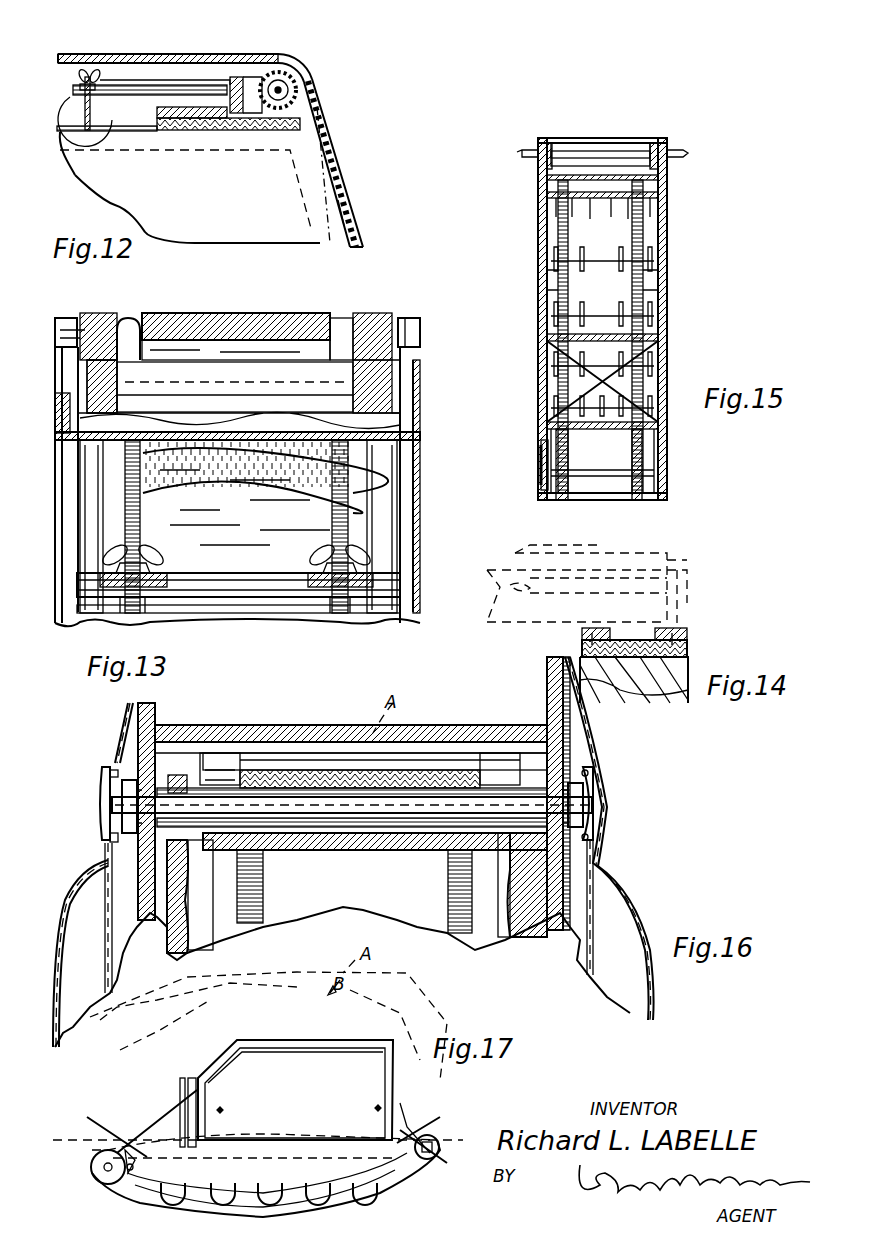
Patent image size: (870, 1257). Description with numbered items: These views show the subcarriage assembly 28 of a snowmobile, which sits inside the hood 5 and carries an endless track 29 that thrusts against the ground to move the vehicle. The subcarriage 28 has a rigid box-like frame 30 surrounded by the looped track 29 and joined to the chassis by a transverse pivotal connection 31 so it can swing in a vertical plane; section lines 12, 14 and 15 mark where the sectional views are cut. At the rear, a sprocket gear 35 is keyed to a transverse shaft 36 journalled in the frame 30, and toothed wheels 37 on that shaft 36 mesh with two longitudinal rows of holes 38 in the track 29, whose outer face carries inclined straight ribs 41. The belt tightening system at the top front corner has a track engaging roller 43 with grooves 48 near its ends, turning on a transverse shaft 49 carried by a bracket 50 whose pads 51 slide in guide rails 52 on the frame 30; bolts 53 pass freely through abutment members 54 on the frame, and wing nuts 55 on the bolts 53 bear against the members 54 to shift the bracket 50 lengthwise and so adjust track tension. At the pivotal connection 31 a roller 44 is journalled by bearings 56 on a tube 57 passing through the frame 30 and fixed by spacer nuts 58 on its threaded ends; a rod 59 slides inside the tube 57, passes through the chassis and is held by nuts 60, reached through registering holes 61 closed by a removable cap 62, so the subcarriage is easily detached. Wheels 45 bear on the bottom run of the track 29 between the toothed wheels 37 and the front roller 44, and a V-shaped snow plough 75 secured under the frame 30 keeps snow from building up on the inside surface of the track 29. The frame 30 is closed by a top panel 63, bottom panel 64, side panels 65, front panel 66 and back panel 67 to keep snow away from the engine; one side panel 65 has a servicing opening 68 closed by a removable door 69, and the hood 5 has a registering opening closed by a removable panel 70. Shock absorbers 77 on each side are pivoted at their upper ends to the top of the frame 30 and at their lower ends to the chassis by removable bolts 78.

In FIG. 16, the hood 5 is at (607, 937).
In FIG. 13, the section line 12— 12 is at (283, 640).
In FIG. 13, the section line 14— 14 is at (111, 490).
In FIG. 17, the section line 15— 15 is at (477, 1122).
In FIG. 12, the subcarriage assembly 28 is at (340, 137).
In FIG. 13, the subcarriage assembly 28 is at (423, 617).
In FIG. 15, the subcarriage assembly 28 is at (673, 429).
In FIG. 16, the subcarriage assembly 28 is at (523, 947).
In FIG. 17, the subcarriage assembly 28 is at (407, 1037).
In FIG. 12, the endless track 29 is at (347, 207).
In FIG. 13, the endless track 29 is at (233, 357).
In FIG. 15, the endless track 29 is at (646, 298).
In FIG. 16, the endless track 29 is at (347, 777).
In FIG. 17, the endless track 29 is at (403, 1187).
In FIG. 12, the frame 30 is at (343, 173).
In FIG. 13, the frame 30 is at (413, 352).
In FIG. 15, the frame 30 is at (646, 270).
In FIG. 14, the frame 30 is at (687, 673).
In FIG. 16, the frame 30 is at (618, 873).
In FIG. 15, the pivotal connection 31 is at (692, 155).
In FIG. 16, the pivotal connection 31 is at (552, 801).
In FIG. 17, the pivotal connection 31 is at (425, 1170).
In FIG. 15, the sprocket gear 35 is at (540, 482).
In FIG. 15, the shaft 36 is at (607, 465).
In FIG. 15, the toothed wheels 37 is at (565, 479).
In FIG. 17, the toothed wheels 37 is at (92, 1193).
In FIG. 13, the holes 38 is at (120, 620).
In FIG. 15, the holes 38 is at (646, 306).
In FIG. 16, the holes 38 is at (460, 917).
In FIG. 16, the ribs 41 is at (440, 760).
In FIG. 12, the track engaging wheel 43 is at (320, 102).
In FIG. 13, the track engaging wheel 43 is at (177, 360).
In FIG. 14, the track engaging wheel 43 is at (687, 545).
In FIG. 15, the roller 44 is at (602, 152).
In FIG. 16, the roller 44 is at (400, 770).
In FIG. 15, the wheels 45 is at (586, 253).
In FIG. 17, the wheels 45 is at (280, 1207).
In FIG. 13, the grooves 48 is at (135, 362).
In FIG. 12, the shaft 49 is at (290, 82).
In FIG. 13, the shaft 49 is at (417, 367).
In FIG. 14, the shaft 49 is at (537, 627).
In FIG. 12, the bracket 50 is at (232, 55).
In FIG. 13, the bracket 50 is at (420, 433).
In FIG. 14, the bracket 50 is at (687, 578).
In FIG. 12, the pads 51 is at (250, 128).
In FIG. 13, the pads 51 is at (393, 513).
In FIG. 14, the pads 51 is at (637, 637).
In FIG. 12, the guide rails 52 is at (278, 130).
In FIG. 13, the guide rails 52 is at (393, 483).
In FIG. 14, the guide rails 52 is at (687, 652).
In FIG. 12, the bolts 53 is at (141, 87).
In FIG. 13, the bolts 53 is at (353, 527).
In FIG. 12, the abutment members 54 is at (84, 97).
In FIG. 13, the abutment members 54 is at (357, 590).
In FIG. 12, the wing nuts 55 is at (82, 123).
In FIG. 13, the wing nuts 55 is at (103, 553).
In FIG. 16, the bearings 56 is at (190, 783).
In FIG. 16, the tube 57 is at (273, 790).
In FIG. 16, the spacer nuts 58 is at (170, 783).
In FIG. 16, the rod 59 is at (307, 805).
In FIG. 16, the nuts 60 is at (586, 776).
In FIG. 16, the registering holes 61 is at (586, 840).
In FIG. 16, the removable cap 62 is at (583, 810).
In FIG. 12, the top panel 63 is at (140, 130).
In FIG. 13, the top panel 63 is at (418, 420).
In FIG. 17, the top panel 63 is at (250, 1153).
In FIG. 13, the bottom panel 64 is at (400, 472).
In FIG. 16, the bottom panel 64 is at (500, 923).
In FIG. 17, the bottom panel 64 is at (343, 1203).
In FIG. 12, the side panels 65 is at (175, 193).
In FIG. 17, the side panels 65 is at (400, 1103).
In FIG. 12, the front panel 66 is at (353, 243).
In FIG. 17, the back panel 67 is at (210, 1147).
In FIG. 17, the servicing opening 68 is at (230, 1065).
In FIG. 17, the removable door 69 is at (350, 1067).
In FIG. 16, the removable panel 70 is at (647, 947).
In FIG. 15, the snow plough arrangement 75 is at (657, 341).
In FIG. 17, the shock absorbers 77 is at (193, 1087).
In FIG. 17, the removable bolts 78 is at (183, 1147).